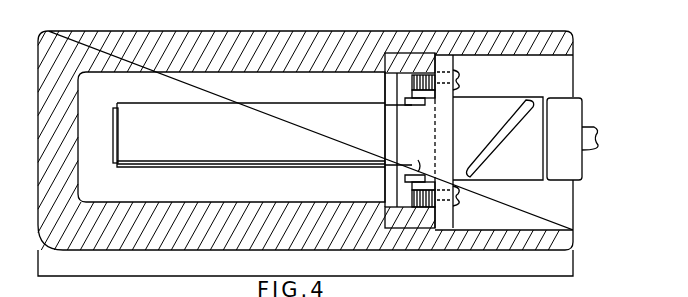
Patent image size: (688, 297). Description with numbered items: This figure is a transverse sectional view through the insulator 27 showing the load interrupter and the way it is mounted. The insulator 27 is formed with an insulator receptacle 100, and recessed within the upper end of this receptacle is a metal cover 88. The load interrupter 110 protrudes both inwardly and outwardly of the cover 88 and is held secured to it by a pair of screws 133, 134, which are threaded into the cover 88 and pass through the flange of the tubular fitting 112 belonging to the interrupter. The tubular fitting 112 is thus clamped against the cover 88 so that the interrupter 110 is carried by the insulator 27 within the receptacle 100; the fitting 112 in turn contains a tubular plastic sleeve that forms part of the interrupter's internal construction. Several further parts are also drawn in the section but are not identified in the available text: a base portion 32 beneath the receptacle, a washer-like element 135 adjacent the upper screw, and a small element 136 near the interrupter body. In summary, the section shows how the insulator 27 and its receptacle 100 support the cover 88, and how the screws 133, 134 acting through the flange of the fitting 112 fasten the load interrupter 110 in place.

The insulator receptacle 100 is at (167, 31).
The insulator 27 is at (560, 31).
The base plate 32 is at (305, 273).
The metal cover 88 is at (420, 62).
The load interrupter 110 is at (262, 140).
The tubular fitting 112 is at (520, 161).
The screw 133 is at (462, 78).
The screw 134 is at (462, 194).
The washer 135 is at (420, 100).
The spacer 136 is at (419, 157).